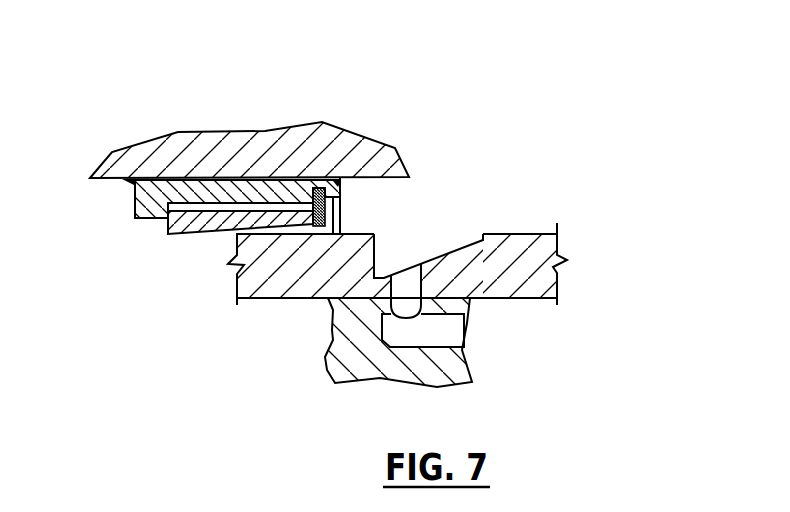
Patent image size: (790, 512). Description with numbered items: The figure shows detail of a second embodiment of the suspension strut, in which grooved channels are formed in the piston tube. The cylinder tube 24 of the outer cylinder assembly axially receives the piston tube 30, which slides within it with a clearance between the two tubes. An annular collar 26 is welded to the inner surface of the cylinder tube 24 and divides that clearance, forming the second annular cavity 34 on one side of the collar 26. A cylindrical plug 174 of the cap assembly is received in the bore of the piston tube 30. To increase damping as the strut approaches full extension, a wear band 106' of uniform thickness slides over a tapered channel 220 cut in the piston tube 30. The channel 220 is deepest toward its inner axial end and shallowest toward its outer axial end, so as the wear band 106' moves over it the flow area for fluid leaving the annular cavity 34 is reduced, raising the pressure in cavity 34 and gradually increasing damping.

The cylinder tube 24 is at (380, 150).
The annular collar 26 is at (135, 203).
The piston tube 30 is at (547, 255).
The second annular cavity 34 is at (414, 216).
The wear band 106' is at (228, 252).
The cylindrical plug 174 is at (333, 340).
The tapered channel 220 is at (455, 240).